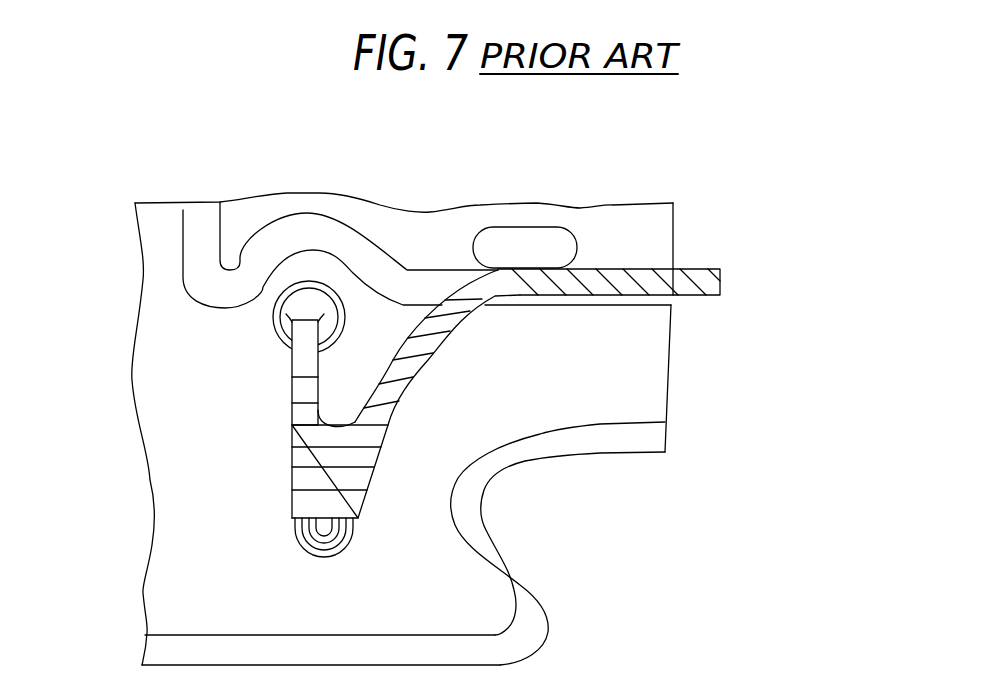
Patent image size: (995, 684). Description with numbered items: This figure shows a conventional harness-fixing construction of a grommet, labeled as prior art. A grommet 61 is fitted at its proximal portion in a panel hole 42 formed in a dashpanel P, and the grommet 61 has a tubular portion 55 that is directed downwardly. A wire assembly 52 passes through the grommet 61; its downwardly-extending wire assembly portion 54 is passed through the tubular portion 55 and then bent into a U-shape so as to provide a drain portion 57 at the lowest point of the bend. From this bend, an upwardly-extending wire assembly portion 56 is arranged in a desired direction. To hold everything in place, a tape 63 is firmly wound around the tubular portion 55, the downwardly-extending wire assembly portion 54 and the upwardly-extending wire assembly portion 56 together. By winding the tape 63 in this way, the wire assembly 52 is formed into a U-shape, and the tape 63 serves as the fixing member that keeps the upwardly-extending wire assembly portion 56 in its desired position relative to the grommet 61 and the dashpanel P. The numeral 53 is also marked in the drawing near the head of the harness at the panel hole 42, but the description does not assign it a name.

The panel hole 42 is at (297, 273).
The dashpanel P is at (401, 228).
The wire assembly 52 is at (707, 263).
The pin head 53 is at (290, 305).
The downwardly-extending wire assembly portion 54 is at (290, 393).
The tubular portion 55 is at (290, 365).
The upwardly-extending wire assembly portion 56 is at (395, 419).
The drain portion 57 is at (342, 553).
The grommet 61 is at (250, 480).
The tape 63 is at (353, 482).